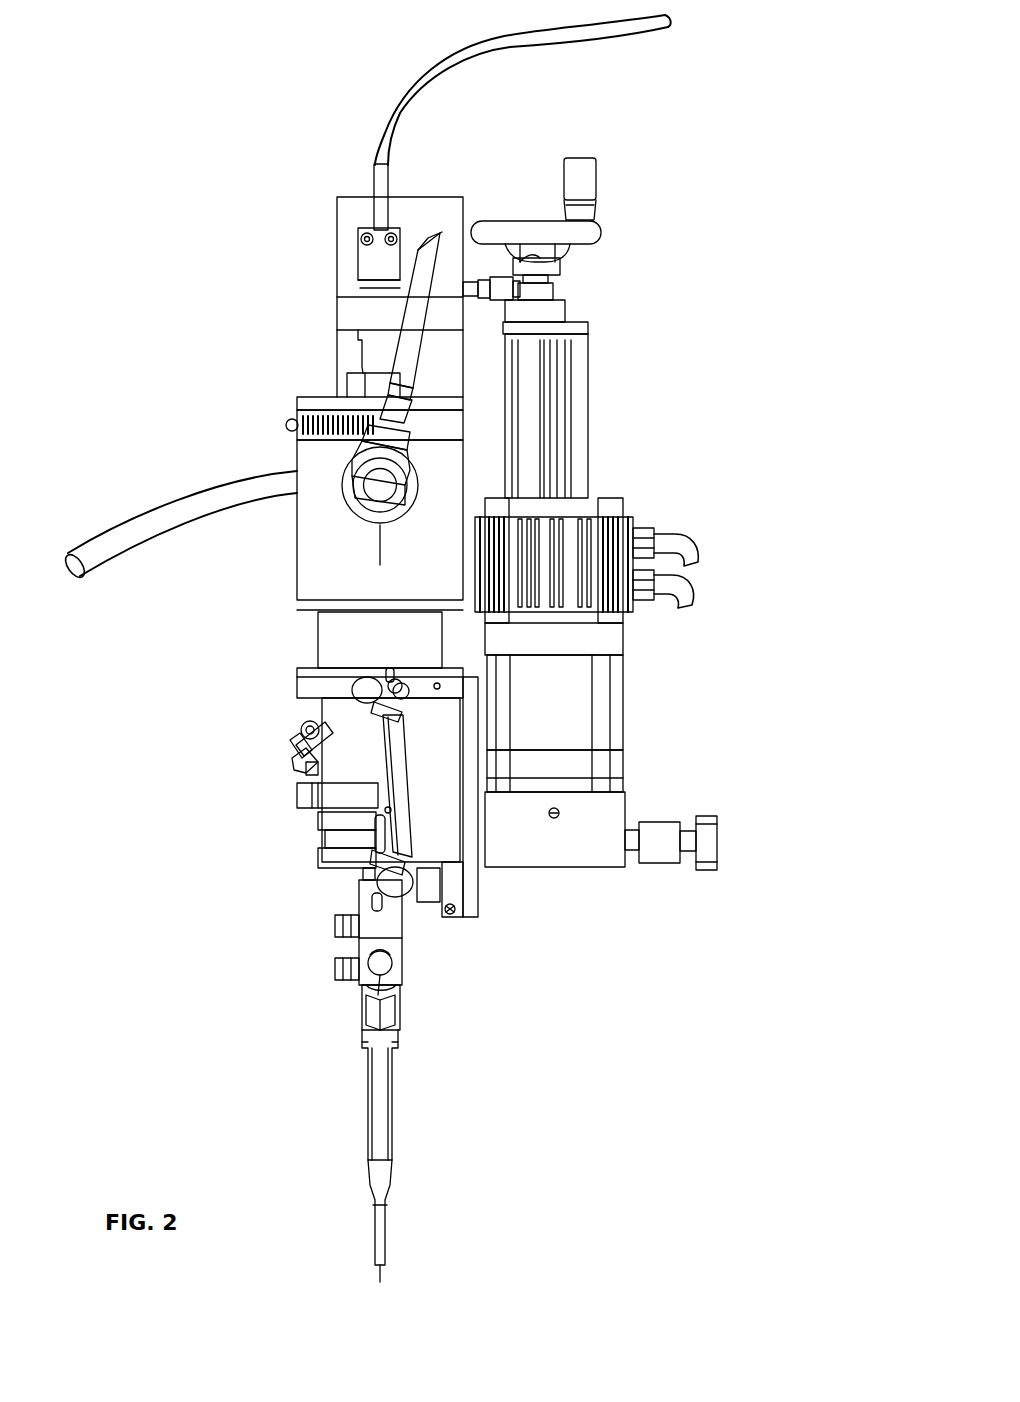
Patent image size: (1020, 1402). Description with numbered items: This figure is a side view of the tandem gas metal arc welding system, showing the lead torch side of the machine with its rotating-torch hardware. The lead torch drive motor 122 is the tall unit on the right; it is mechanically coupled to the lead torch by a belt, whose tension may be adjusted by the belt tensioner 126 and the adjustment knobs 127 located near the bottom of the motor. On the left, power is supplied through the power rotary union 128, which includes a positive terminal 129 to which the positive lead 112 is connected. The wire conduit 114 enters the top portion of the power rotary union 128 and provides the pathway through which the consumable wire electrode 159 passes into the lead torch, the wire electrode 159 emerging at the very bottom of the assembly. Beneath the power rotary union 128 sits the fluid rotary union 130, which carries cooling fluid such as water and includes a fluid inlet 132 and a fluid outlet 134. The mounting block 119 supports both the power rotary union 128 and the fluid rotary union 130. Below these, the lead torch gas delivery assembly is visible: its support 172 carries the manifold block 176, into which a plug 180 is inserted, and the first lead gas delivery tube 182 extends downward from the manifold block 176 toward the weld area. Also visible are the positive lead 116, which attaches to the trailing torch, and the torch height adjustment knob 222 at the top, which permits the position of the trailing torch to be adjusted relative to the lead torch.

The positive lead 112 is at (420, 345).
The wire conduit 114 is at (510, 48).
The positive lead 116 is at (187, 493).
The mounting block 119 is at (450, 830).
The lead torch drive motor 122 is at (617, 698).
The belt tensioner 126 is at (584, 867).
The adjustment knobs 127 is at (718, 841).
The power rotary union 128 is at (297, 605).
The positive terminal 129 is at (358, 513).
The fluid rotary union 130 is at (325, 708).
The fluid inlet 132 is at (285, 758).
The fluid outlet 134 is at (290, 732).
The wire electrode 159 is at (388, 1275).
The support 172 is at (407, 828).
The manifold block 176 is at (357, 945).
The plug 180 is at (363, 1015).
The first lead gas delivery tube 182 is at (392, 1110).
The torch height adjustment knob 222 is at (597, 178).